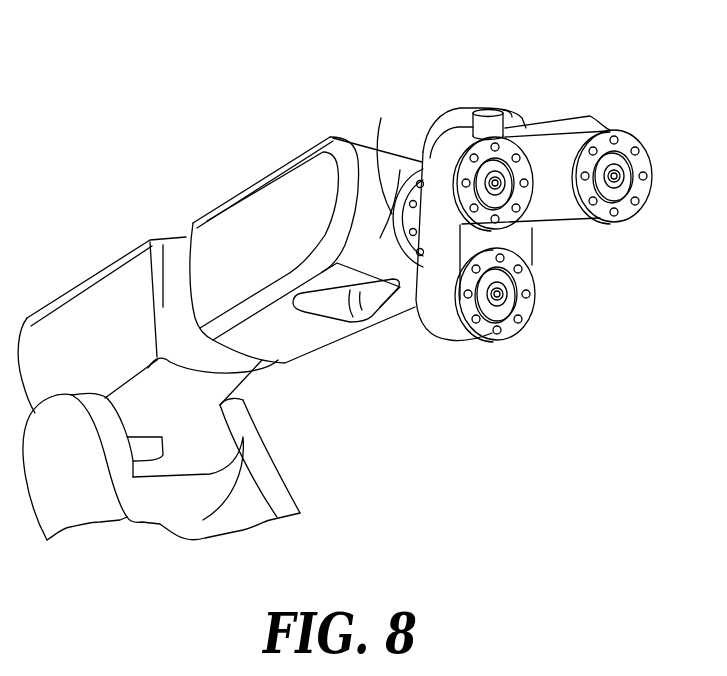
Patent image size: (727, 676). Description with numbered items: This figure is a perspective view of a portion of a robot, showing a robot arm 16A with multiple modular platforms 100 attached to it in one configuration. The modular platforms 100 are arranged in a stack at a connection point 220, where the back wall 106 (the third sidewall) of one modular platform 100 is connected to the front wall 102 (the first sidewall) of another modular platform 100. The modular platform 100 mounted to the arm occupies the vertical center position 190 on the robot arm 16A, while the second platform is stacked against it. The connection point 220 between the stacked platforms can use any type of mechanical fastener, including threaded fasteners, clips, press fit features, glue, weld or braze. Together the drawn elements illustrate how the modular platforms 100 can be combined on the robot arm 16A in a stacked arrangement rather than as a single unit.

The robot arm 16A is at (243, 205).
The vertical center position 190 is at (390, 193).
The modular platform 100 is at (592, 110).
The third sidewall 106 is at (565, 111).
The connection point 220 is at (527, 115).
The first sidewall 102 is at (522, 241).